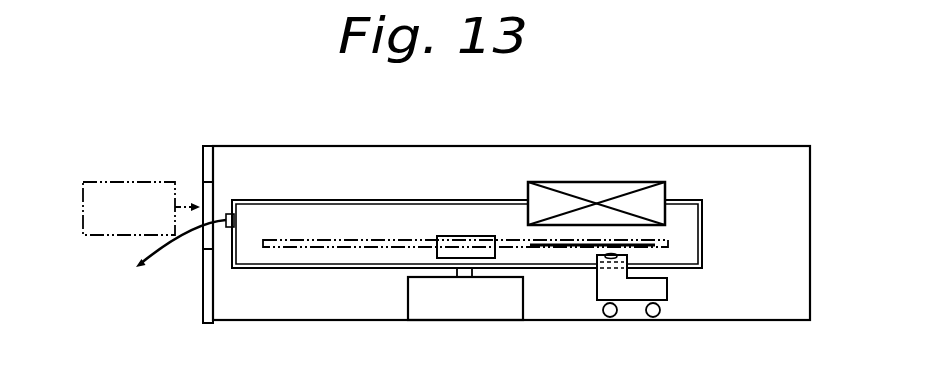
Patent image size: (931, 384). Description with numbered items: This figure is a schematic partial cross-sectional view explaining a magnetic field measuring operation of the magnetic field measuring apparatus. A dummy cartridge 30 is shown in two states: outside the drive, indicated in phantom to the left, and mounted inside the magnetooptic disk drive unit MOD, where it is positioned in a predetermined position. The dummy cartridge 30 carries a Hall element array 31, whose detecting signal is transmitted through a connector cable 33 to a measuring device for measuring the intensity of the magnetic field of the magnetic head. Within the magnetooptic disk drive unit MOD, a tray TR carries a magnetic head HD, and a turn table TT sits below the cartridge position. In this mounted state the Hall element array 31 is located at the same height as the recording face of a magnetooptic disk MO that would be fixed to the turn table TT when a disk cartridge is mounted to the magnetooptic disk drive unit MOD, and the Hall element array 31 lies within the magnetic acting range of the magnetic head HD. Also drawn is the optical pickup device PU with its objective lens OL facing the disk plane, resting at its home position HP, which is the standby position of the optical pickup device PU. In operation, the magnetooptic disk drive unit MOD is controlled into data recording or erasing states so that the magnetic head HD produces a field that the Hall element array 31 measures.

The dummy cartridge 30 is at (145, 182).
The Hall element array 31 is at (585, 247).
The connector cable 33 is at (228, 228).
The tray TR is at (385, 200).
The magnetooptic disk MO is at (315, 250).
The turn table TT is at (440, 256).
The magnetic head HD is at (610, 182).
The magnetooptic disk drive unit MOD is at (720, 146).
The objective lens OL is at (614, 260).
The optical pickup device PU is at (665, 295).
The home position HP is at (608, 332).